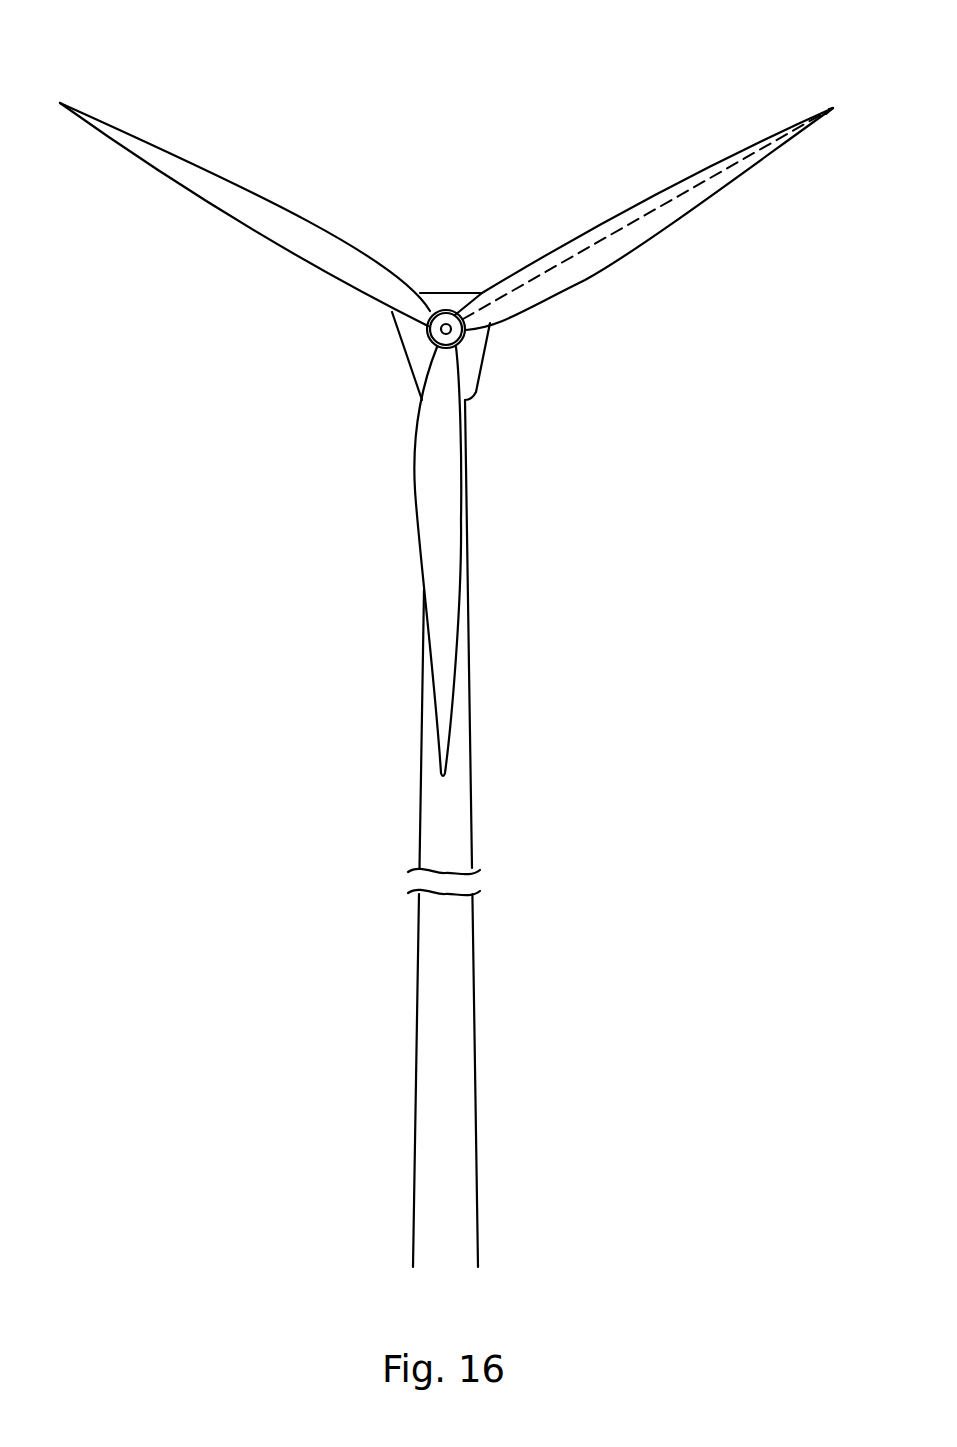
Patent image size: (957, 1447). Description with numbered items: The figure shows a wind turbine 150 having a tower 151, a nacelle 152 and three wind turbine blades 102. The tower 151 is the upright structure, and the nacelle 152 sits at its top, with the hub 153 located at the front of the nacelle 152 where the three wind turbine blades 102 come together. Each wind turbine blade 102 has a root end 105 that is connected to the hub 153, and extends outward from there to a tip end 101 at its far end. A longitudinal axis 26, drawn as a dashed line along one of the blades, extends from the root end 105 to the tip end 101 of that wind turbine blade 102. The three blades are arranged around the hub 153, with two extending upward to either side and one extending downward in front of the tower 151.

The wind turbine 150 is at (678, 447).
The wind turbine blade 102 is at (265, 212).
The tip end 101 is at (834, 104).
The longitudinal axis 26 is at (665, 203).
The nacelle 152 is at (450, 292).
The root end 105 is at (468, 328).
The hub 153 is at (466, 344).
The tower 151 is at (458, 968).